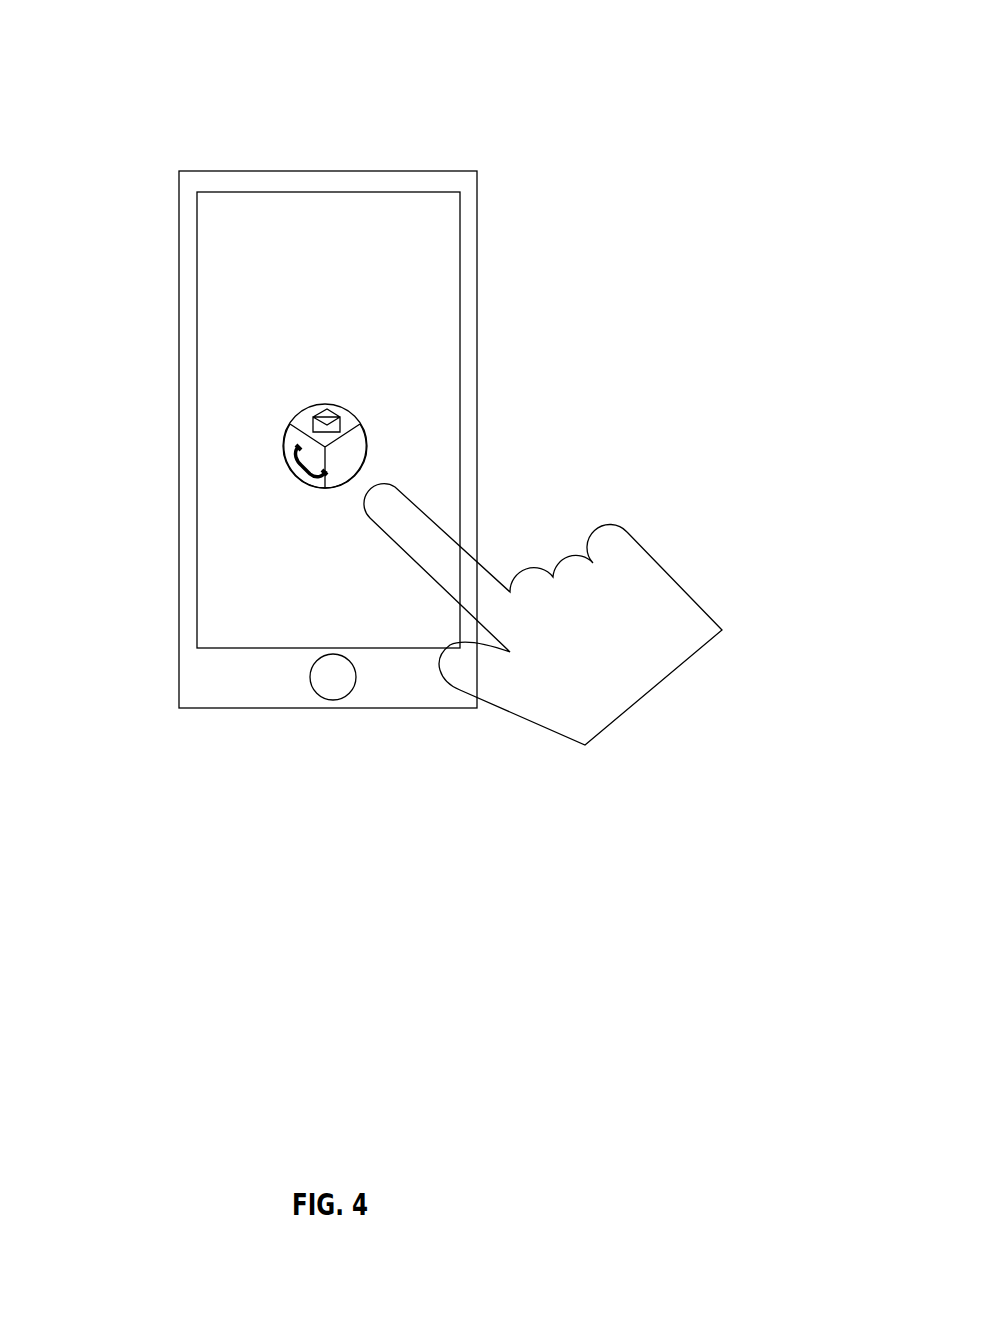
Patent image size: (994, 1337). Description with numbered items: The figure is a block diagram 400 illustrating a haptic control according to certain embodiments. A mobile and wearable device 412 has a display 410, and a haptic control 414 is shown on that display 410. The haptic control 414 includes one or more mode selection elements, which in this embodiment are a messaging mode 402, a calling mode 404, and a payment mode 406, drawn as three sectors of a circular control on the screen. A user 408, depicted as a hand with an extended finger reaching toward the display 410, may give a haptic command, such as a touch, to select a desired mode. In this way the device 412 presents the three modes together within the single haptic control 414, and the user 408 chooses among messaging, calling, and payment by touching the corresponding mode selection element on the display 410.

The block diagram 400 is at (632, 86).
The messaging mode 402 is at (325, 403).
The calling mode 404 is at (284, 445).
The payment mode 406 is at (360, 462).
The user 408 is at (436, 552).
The display 410 is at (242, 291).
The mobile and wearable device 412 is at (182, 183).
The haptic control 414 is at (307, 462).